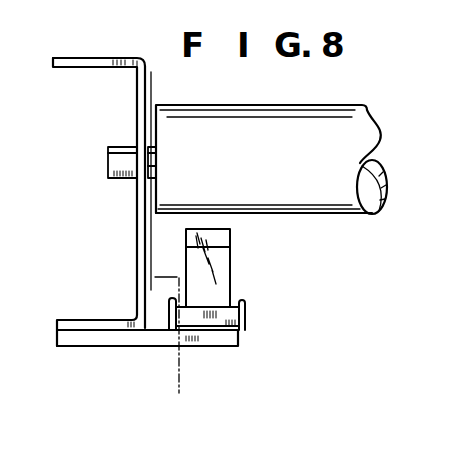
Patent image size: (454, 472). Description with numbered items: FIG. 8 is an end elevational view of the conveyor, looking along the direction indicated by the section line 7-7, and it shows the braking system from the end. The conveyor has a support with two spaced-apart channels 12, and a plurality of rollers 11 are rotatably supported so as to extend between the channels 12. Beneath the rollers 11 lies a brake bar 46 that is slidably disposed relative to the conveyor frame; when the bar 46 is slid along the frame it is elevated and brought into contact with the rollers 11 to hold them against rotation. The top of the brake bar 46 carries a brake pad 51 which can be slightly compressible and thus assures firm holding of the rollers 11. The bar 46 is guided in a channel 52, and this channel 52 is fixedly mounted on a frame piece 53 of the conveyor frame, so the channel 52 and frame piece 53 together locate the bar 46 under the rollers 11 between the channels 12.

The rollers 11 is at (373, 114).
The channels 12 is at (140, 228).
The brake bar 46 is at (225, 263).
The brake pad 51 is at (225, 237).
The channel 52 is at (248, 302).
The frame piece 53 is at (232, 337).
The section line 7- 7 is at (190, 82).